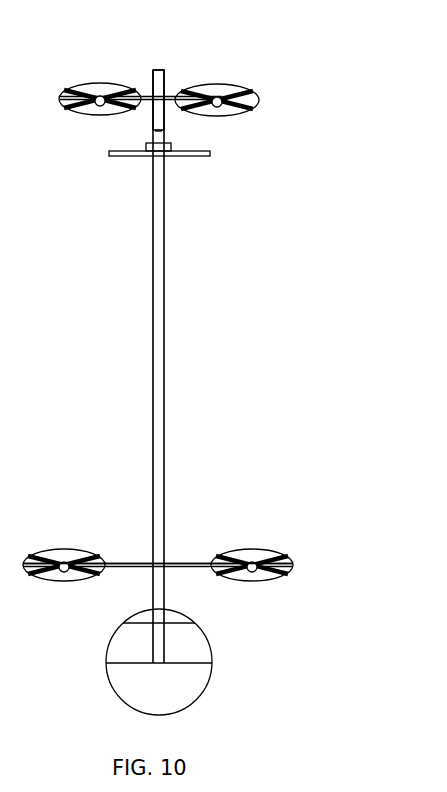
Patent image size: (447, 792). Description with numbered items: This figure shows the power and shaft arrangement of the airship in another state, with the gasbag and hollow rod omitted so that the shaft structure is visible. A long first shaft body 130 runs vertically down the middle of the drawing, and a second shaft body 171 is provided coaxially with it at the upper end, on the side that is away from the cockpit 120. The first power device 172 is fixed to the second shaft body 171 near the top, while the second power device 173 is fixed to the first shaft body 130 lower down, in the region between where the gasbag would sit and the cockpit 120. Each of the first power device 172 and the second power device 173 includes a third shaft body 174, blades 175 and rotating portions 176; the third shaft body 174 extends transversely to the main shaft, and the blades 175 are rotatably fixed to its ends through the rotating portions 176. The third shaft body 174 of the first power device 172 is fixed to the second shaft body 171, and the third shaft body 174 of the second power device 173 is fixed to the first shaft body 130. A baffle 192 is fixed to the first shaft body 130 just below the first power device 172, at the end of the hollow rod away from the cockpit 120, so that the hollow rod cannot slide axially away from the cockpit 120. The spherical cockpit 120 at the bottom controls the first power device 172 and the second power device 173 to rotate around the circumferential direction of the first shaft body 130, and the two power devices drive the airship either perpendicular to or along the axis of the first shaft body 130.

The cockpit 120 is at (187, 649).
The first shaft body 130 is at (157, 220).
The second shaft body 171 is at (157, 87).
The first power device 172 is at (290, 40).
The second power device 173 is at (327, 506).
The third shaft body 174 is at (168, 98).
The blades 175 is at (200, 92).
The rotating portions 176 is at (243, 90).
The baffle 192 is at (193, 153).